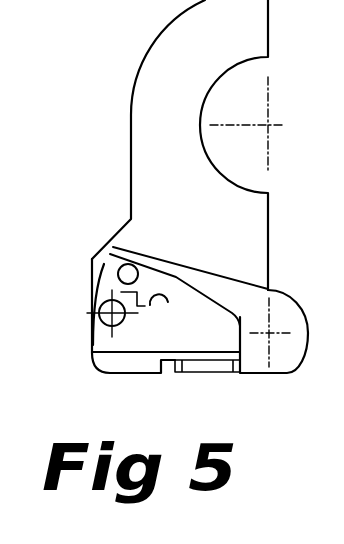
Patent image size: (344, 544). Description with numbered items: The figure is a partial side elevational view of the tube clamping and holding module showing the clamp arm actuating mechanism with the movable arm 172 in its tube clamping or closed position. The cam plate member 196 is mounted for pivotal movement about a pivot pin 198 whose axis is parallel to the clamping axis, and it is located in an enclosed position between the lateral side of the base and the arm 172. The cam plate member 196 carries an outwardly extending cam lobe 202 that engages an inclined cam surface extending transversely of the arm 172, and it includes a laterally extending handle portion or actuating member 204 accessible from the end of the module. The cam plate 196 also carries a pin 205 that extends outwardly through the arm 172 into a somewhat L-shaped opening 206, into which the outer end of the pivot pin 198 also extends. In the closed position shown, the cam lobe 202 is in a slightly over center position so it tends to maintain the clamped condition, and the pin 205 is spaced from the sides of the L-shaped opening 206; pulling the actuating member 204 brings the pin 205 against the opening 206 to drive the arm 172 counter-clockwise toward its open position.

The movable arm 172 is at (150, 163).
The cam plate member 196 is at (118, 362).
The pivot pin 198 is at (92, 331).
The cam lobe 202 is at (104, 264).
The handle portion or actuating member 204 is at (208, 374).
The pin 205 is at (119, 267).
The L-shaped opening 206 is at (150, 307).